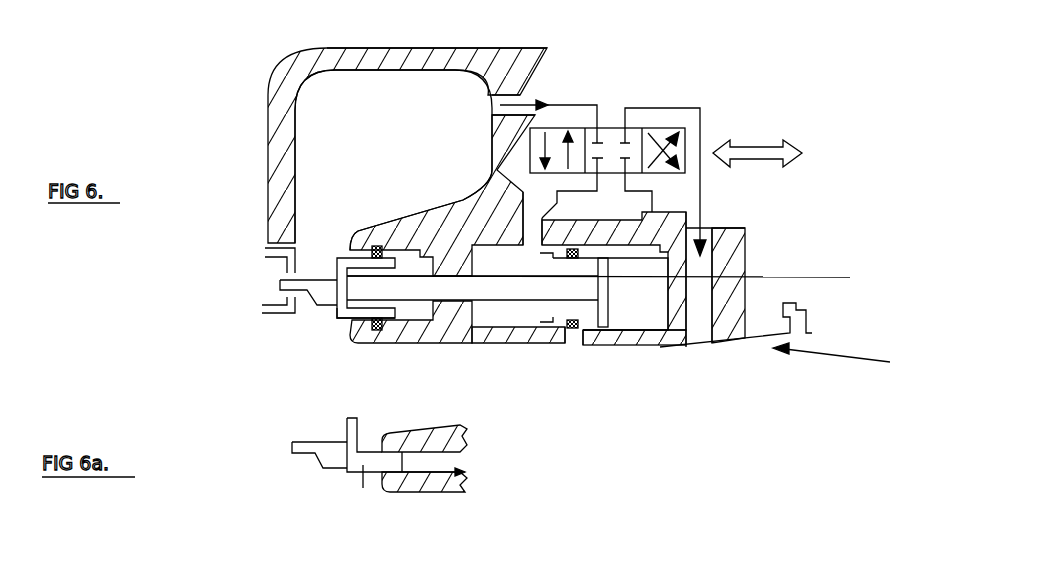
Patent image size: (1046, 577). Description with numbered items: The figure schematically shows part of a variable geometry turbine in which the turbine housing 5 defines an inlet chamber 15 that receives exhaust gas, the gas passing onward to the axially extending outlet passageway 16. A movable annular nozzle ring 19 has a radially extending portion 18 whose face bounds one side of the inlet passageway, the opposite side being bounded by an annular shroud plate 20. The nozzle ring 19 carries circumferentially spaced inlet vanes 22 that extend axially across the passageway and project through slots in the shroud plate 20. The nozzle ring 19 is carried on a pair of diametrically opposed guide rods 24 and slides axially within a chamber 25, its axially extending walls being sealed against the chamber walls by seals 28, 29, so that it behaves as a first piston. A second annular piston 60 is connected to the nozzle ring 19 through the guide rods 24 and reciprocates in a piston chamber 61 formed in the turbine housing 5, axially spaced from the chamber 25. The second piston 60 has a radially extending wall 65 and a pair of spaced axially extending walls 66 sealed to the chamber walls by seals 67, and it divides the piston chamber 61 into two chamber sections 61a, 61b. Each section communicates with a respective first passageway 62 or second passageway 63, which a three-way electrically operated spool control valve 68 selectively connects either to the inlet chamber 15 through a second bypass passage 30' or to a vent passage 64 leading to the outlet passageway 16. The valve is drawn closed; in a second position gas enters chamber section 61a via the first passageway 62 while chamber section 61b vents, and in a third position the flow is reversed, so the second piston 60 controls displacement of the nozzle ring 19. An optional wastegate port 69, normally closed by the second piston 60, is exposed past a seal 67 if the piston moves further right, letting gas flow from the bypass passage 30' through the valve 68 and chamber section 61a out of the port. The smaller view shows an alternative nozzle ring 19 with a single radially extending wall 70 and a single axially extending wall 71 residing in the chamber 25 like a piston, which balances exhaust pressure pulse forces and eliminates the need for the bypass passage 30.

In FIG. 6, the turbine housing 5 is at (345, 57).
In FIG. 6, the inlet chamber 15 is at (323, 100).
In FIG. 6, the outlet passageway 16 is at (787, 302).
In FIG. 6, the radially extending portion 18 is at (342, 272).
In FIG. 6, the nozzle ring 19 is at (340, 313).
In FIG. 6a, the nozzle ring 19 is at (332, 484).
In FIG. 6, the shroud plate 20 is at (268, 317).
In FIG. 6, the inlet vanes 22 is at (287, 283).
In FIG. 6a, the inlet vanes 22 is at (302, 448).
In FIG. 6, the guide rods 24 is at (452, 293).
In FIG. 6, the chamber 25 is at (408, 312).
In FIG. 6a, the chamber 25 is at (412, 462).
In FIG. 6, the seal 28 is at (375, 245).
In FIG. 6, the seal 29 is at (377, 330).
In FIG. 6, the bypass passage 30 is at (407, 162).
In FIG. 6, the second bypass passage 30' is at (519, 59).
In FIG. 6, the second annular piston 60 is at (603, 318).
In FIG. 6, the piston chamber 61 is at (626, 322).
In FIG. 6, the chamber section 61a is at (512, 312).
In FIG. 6, the chamber section 61b is at (642, 320).
In FIG. 6, the first passageway 62 is at (540, 225).
In FIG. 6, the second passageway 63 is at (650, 222).
In FIG. 6, the vent passage 64 is at (703, 340).
In FIG. 6, the radially extending wall 65 is at (618, 281).
In FIG. 6, the axially extending walls 66 is at (610, 260).
In FIG. 6, the seals 67 is at (553, 261).
In FIG. 6, the control valve 68 is at (607, 130).
In FIG. 6, the wastegate port 69 is at (573, 345).
In FIG. 6a, the radially extending wall 70 is at (347, 427).
In FIG. 6a, the axially extending wall 71 is at (368, 490).